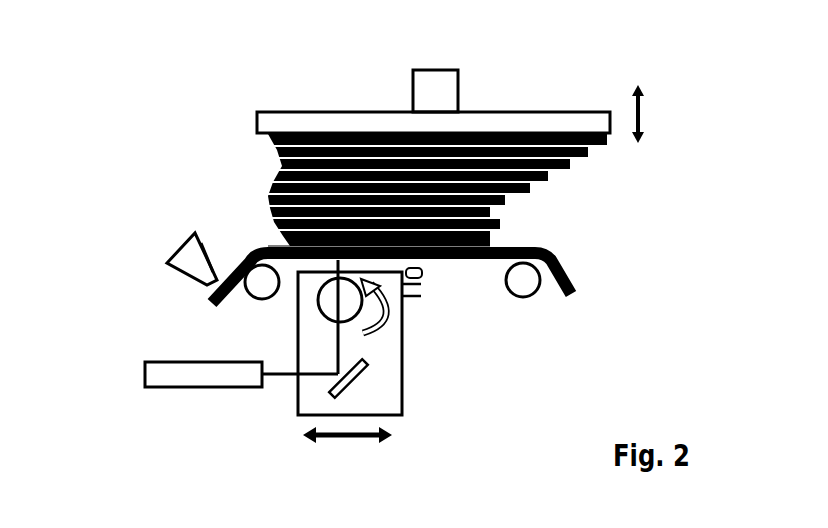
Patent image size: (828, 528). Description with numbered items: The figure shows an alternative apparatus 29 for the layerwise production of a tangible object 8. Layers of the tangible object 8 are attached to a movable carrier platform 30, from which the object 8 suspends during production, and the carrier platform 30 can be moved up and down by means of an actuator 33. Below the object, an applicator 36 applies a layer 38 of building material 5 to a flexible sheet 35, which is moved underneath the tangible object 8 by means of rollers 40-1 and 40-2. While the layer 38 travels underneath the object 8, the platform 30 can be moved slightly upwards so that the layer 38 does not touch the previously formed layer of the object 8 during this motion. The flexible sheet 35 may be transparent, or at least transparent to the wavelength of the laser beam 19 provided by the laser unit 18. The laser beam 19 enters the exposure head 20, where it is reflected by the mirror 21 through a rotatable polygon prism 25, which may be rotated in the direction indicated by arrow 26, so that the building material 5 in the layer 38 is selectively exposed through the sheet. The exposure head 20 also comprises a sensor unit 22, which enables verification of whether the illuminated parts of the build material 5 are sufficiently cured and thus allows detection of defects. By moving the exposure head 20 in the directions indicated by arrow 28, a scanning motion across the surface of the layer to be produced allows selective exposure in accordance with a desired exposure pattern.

The apparatus 29 is at (110, 170).
The carrier platform 30 is at (257, 128).
The actuator 33 is at (458, 88).
The tangible object 8 is at (521, 187).
The building material 5 is at (257, 242).
The flexible sheet 35 is at (557, 298).
The roller 40-1 is at (264, 298).
The roller 40-2 is at (521, 297).
The applicator 36 is at (212, 240).
The layer 38 is at (250, 246).
The exposure head 20 is at (403, 398).
The rotatable polygon prism 25 is at (350, 326).
The arrow 26 is at (408, 306).
The sensor unit 22 is at (423, 286).
The mirror 21 is at (363, 373).
The laser unit 18 is at (202, 388).
The laser beam 19 is at (273, 378).
The arrow 28 is at (348, 442).